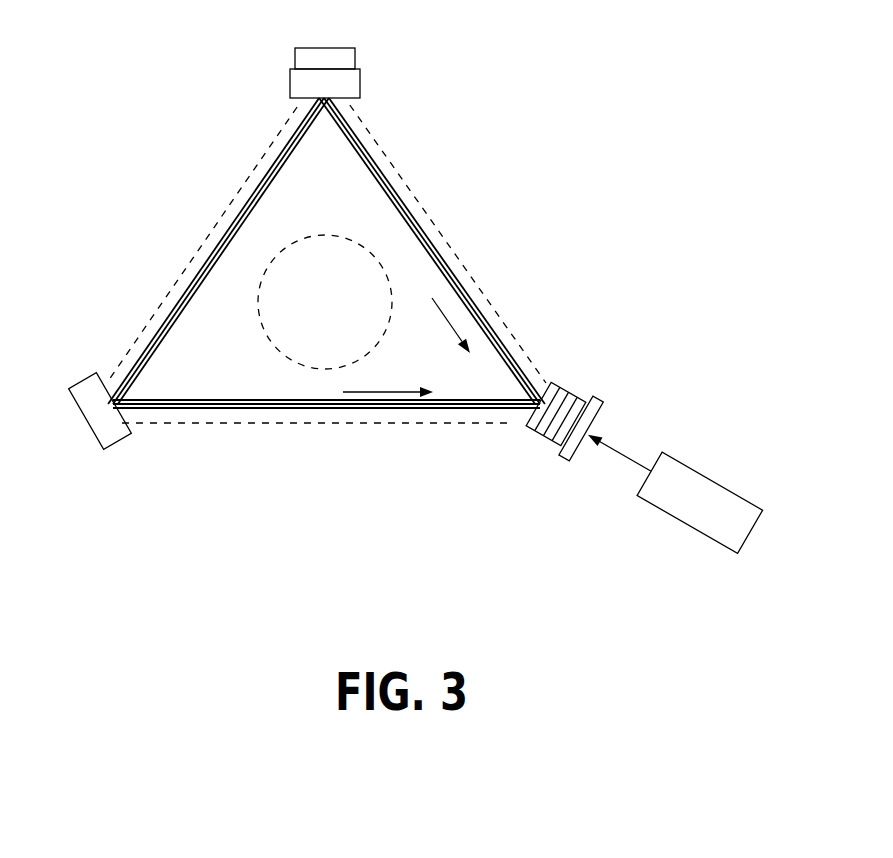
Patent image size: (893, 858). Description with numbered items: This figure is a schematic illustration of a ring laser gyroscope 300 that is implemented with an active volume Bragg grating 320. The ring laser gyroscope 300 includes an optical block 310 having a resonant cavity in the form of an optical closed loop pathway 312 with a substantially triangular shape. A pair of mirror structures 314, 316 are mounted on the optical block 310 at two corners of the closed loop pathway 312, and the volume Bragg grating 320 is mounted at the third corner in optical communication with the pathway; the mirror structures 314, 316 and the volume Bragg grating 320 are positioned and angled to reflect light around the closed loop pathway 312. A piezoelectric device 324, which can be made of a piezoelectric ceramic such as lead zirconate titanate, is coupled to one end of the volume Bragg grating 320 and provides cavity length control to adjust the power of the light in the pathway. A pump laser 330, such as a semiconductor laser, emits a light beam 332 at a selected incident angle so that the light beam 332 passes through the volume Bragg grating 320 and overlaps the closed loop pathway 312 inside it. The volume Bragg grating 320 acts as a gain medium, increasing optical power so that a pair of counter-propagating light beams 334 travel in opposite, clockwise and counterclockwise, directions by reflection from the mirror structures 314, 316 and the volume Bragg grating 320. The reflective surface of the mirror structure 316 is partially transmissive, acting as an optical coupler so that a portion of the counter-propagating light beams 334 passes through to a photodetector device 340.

The ring laser gyroscope 300 is at (480, 94).
The optical block 310 is at (448, 245).
The optical closed loop pathway 312 is at (183, 307).
The mirror structure 314 is at (85, 418).
The mirror structure 316 is at (290, 75).
The active volume Bragg grating 320 is at (569, 389).
The piezoelectric device 324 is at (577, 455).
The pump laser 330 is at (667, 513).
The light beam 332 is at (633, 461).
The counter-propagating light beams 334 is at (326, 279).
The photodetector device 340 is at (318, 47).